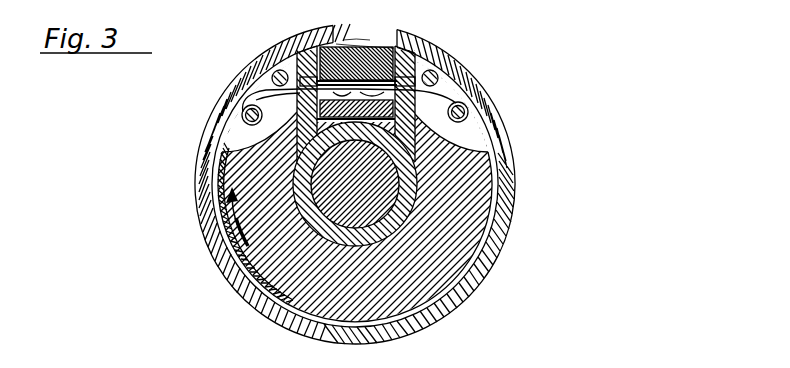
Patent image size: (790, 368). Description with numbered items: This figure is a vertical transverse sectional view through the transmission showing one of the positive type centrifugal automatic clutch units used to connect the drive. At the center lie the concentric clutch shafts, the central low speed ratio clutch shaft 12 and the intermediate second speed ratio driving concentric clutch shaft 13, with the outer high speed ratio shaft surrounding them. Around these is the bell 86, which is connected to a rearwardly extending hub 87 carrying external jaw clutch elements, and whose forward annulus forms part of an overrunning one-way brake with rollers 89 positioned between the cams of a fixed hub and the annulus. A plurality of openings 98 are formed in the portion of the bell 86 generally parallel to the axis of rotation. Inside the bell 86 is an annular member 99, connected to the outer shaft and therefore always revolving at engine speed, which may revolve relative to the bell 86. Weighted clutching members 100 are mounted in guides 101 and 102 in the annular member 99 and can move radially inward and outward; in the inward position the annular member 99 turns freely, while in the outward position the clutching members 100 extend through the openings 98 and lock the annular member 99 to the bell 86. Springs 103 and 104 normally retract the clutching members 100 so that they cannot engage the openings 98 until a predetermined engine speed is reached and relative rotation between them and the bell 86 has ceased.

The central low speed ratio clutch shaft 12 is at (360, 213).
The intermediate second speed ratio driving concentric clutch shaft 13 is at (397, 207).
The bell 86 is at (455, 74).
The hub 87 is at (284, 167).
The rollers 89 is at (350, 38).
The openings 98 is at (365, 37).
The annular member 99 is at (465, 215).
The weighted clutching members 100 is at (353, 60).
The guide 101 is at (333, 43).
The guide 102 is at (398, 45).
The spring 103 is at (262, 88).
The spring 104 is at (462, 98).